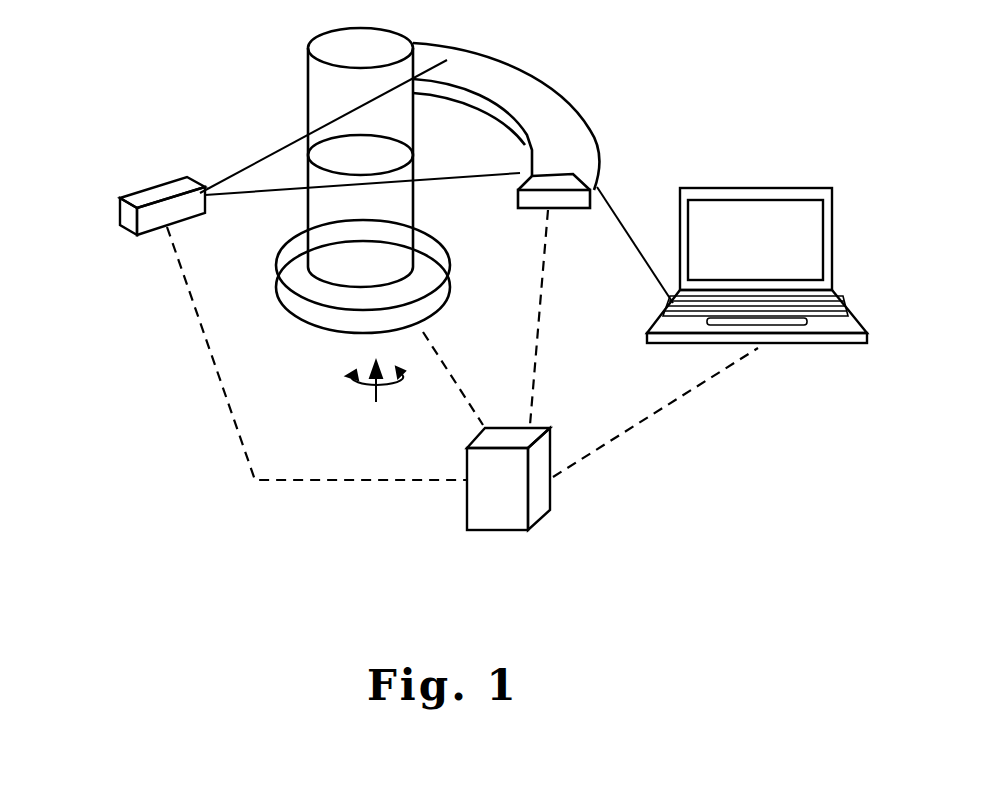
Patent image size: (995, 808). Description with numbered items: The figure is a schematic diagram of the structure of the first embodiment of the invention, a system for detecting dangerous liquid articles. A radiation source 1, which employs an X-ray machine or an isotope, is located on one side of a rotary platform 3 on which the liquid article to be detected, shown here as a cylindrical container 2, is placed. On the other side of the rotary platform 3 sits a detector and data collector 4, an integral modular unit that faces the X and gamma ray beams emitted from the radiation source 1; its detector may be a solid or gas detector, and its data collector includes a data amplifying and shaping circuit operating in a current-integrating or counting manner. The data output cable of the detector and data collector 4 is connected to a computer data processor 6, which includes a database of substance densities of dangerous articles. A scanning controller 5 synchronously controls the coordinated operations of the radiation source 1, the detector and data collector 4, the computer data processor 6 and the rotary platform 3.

The radiation source 1 is at (121, 287).
The sample cylinder 2 is at (258, 157).
The rotary platform 3 is at (363, 311).
The detector and data collector 4 is at (589, 117).
The scanning controller 5 is at (583, 495).
The computer data processor 6 is at (773, 315).